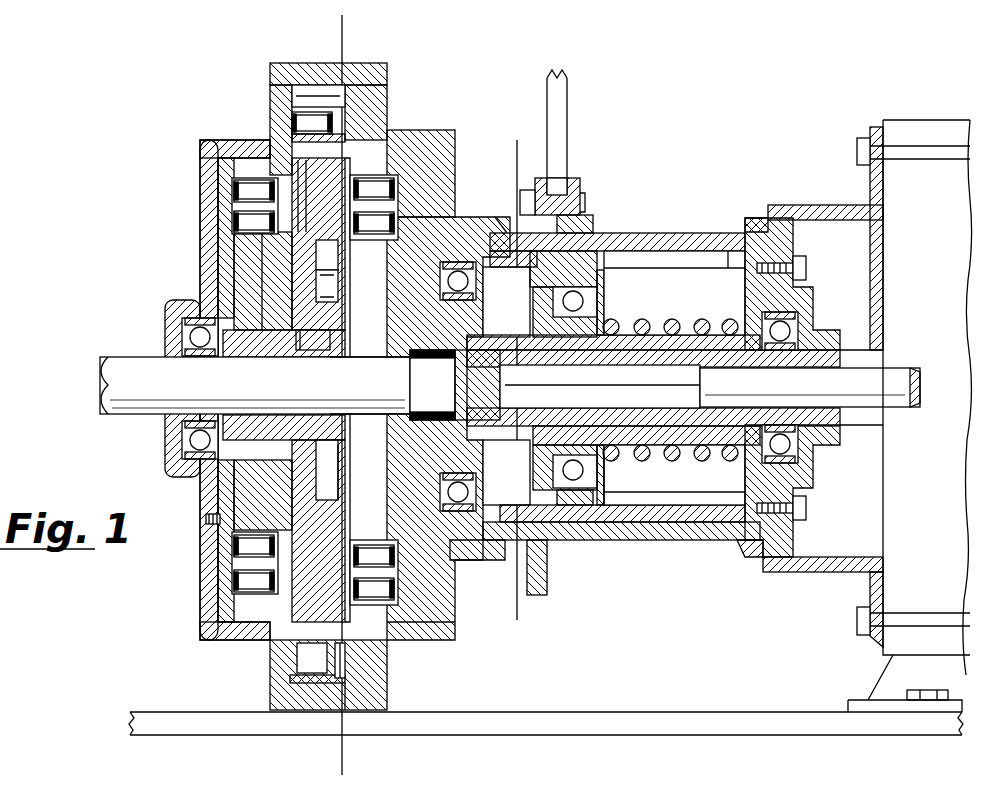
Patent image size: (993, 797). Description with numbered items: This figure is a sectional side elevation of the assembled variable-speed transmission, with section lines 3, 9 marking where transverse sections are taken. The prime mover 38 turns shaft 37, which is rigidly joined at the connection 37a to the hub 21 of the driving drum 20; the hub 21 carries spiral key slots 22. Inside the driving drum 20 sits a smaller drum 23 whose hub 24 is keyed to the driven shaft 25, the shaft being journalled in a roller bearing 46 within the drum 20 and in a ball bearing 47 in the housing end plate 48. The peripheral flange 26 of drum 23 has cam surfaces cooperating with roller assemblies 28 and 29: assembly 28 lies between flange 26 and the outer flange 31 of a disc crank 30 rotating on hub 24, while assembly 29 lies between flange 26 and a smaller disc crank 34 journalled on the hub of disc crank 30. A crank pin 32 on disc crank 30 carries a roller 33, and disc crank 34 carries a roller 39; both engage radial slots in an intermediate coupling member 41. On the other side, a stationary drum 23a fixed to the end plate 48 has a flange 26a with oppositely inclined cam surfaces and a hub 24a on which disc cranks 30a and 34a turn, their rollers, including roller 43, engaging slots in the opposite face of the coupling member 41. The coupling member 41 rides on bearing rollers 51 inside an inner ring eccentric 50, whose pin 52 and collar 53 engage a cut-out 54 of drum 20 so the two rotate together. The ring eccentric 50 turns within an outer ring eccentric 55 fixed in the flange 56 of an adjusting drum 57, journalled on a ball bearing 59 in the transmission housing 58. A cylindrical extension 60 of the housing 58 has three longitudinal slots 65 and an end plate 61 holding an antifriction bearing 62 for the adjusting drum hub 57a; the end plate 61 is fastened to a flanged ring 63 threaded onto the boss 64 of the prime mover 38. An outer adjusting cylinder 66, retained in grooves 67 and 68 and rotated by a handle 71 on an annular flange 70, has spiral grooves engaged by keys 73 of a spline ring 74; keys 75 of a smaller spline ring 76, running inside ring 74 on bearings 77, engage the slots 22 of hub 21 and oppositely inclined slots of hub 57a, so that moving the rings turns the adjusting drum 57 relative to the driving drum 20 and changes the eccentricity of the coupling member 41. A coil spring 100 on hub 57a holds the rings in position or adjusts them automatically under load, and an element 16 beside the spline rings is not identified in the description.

The section line 3- 3 is at (322, 762).
The section line 9- 9 is at (547, 606).
The spring seat ring 16 is at (615, 330).
The driving drum 20 is at (375, 130).
The axial shaft (hub) of driving drum 21 is at (483, 350).
The spiral key slots 22 is at (575, 385).
The smaller drum 23 is at (450, 224).
The stationary drum 23a is at (228, 270).
The hub of smaller drum 24 is at (356, 345).
The hub of stationary drum 24a is at (245, 420).
The driven shaft 25 is at (255, 385).
The peripheral flange 26 is at (317, 196).
The circumferential flange 26a is at (232, 208).
The roller assembly 28 is at (388, 165).
The roller assembly 29 is at (372, 236).
The disc crank 30 is at (316, 327).
The disc crank 30a is at (258, 281).
The outer peripheral flange 31 is at (421, 648).
The crank pin 32 is at (326, 279).
The roller 33 is at (322, 245).
The second disc crank 34 is at (334, 390).
The disc crank 34a is at (263, 381).
The prime mover shaft 37 is at (810, 387).
The connection 37a is at (600, 386).
The prime mover 38 is at (918, 122).
The roller 39 is at (326, 490).
The intermediate coupling member 41 is at (285, 150).
The roller 43 is at (305, 350).
The roller bearing 46 is at (432, 385).
The ball bearing 47 is at (170, 452).
The housing end plate 48 is at (210, 502).
The ring eccentric 50 is at (290, 640).
The bearing rollers 51 is at (270, 612).
The pin 52 is at (355, 655).
The collar 53 is at (350, 630).
The cut-out portion 54 is at (350, 685).
The outer ring eccentric 55 is at (290, 677).
The outer peripheral flange 56 is at (300, 712).
The adjusting drum 57 is at (440, 585).
The adjusting drum hub 57a is at (660, 335).
The transmission housing 58 is at (386, 675).
The ball bearing 59 is at (475, 287).
The cylindrical extension 60 is at (745, 232).
The end plate 61 is at (757, 290).
The antifriction bearing 62 is at (757, 298).
The flanged ring 63 is at (812, 300).
The boss 64 is at (824, 212).
The longitudinal slots 65 is at (640, 268).
The outer adjusting cylinder 66 is at (657, 222).
The groove 67 is at (505, 225).
The groove 68 is at (760, 220).
The annular flange 70 is at (542, 190).
The handle 71 is at (568, 157).
The keys 73 is at (585, 240).
The spline ring 74 is at (540, 272).
The keys 75 is at (510, 440).
The smaller spline ring 76 is at (670, 327).
The bearings 77 is at (598, 475).
The coil spring 100 is at (684, 460).